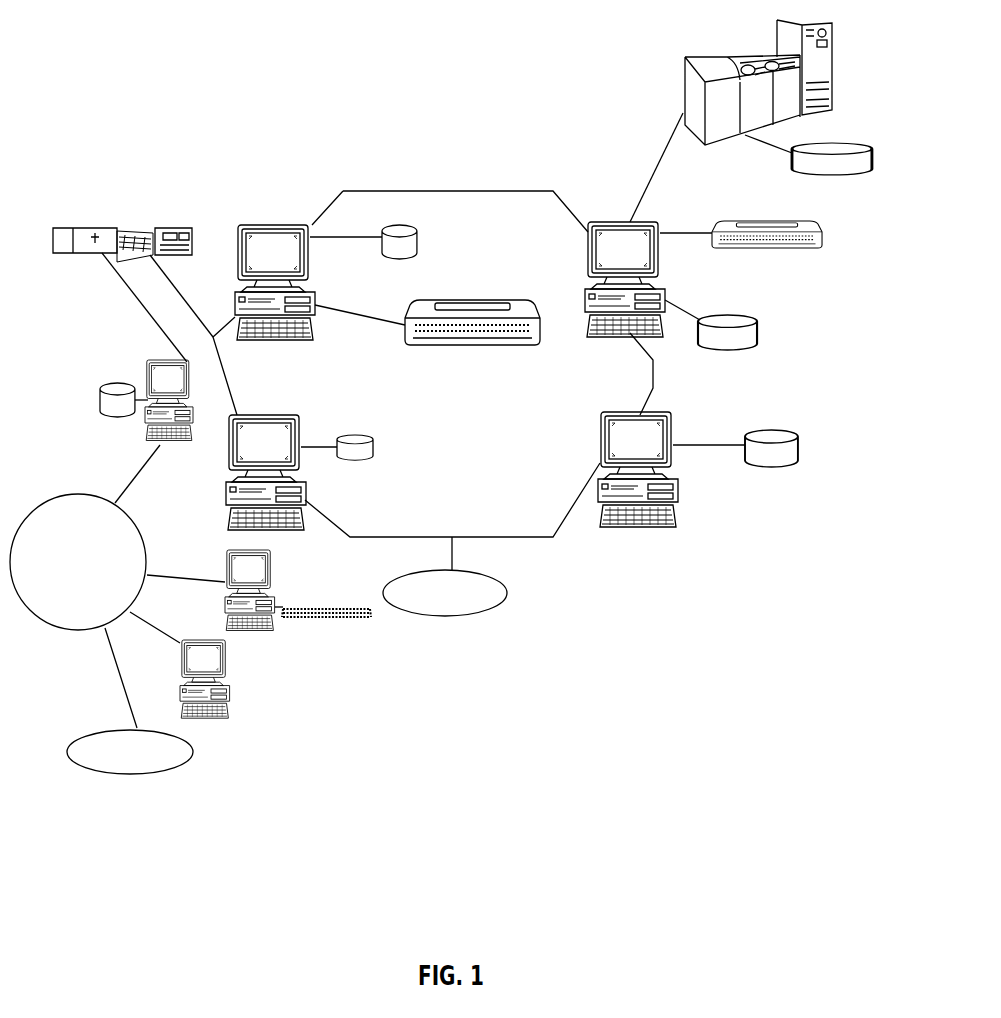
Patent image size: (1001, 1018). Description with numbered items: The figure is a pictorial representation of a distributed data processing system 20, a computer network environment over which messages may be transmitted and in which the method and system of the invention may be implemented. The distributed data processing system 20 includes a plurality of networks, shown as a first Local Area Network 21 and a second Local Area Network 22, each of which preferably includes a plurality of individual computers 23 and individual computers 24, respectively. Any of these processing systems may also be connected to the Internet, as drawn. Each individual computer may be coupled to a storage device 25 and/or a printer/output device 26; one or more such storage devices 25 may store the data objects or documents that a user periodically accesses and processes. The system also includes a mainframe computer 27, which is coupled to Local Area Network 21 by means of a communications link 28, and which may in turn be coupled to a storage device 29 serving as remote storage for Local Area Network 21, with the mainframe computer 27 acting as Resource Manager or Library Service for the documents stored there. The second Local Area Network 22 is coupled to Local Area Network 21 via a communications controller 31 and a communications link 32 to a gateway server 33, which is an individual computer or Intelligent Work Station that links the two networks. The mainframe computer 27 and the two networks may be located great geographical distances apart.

The distributed data processing system 20 is at (452, 170).
The Local Area Network (LAN) 21 is at (553, 537).
The Local Area Network (LAN) 22 is at (78, 493).
The individual computer 23 is at (270, 230).
The individual computer 24 is at (272, 556).
The storage device 25 is at (417, 240).
The printer/output device 26 is at (470, 305).
The mainframe computer 27 is at (727, 58).
The communications link 28 is at (660, 153).
The storage device 29 is at (825, 142).
The communications controller 31 is at (185, 233).
The communications link 32 is at (138, 302).
The gateway server 33 is at (150, 362).